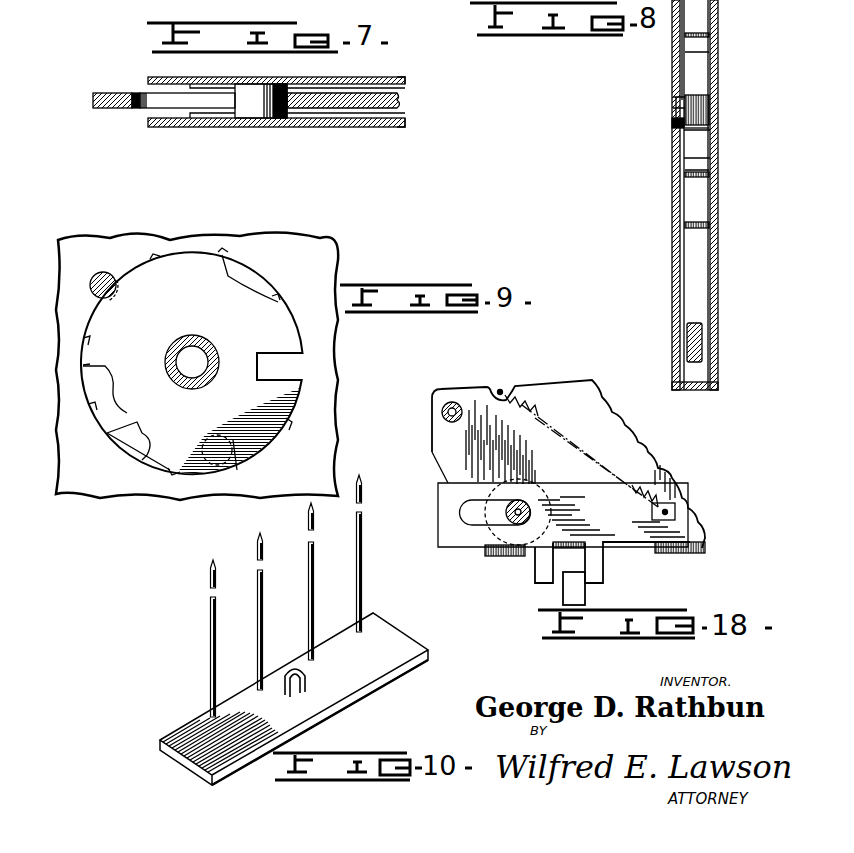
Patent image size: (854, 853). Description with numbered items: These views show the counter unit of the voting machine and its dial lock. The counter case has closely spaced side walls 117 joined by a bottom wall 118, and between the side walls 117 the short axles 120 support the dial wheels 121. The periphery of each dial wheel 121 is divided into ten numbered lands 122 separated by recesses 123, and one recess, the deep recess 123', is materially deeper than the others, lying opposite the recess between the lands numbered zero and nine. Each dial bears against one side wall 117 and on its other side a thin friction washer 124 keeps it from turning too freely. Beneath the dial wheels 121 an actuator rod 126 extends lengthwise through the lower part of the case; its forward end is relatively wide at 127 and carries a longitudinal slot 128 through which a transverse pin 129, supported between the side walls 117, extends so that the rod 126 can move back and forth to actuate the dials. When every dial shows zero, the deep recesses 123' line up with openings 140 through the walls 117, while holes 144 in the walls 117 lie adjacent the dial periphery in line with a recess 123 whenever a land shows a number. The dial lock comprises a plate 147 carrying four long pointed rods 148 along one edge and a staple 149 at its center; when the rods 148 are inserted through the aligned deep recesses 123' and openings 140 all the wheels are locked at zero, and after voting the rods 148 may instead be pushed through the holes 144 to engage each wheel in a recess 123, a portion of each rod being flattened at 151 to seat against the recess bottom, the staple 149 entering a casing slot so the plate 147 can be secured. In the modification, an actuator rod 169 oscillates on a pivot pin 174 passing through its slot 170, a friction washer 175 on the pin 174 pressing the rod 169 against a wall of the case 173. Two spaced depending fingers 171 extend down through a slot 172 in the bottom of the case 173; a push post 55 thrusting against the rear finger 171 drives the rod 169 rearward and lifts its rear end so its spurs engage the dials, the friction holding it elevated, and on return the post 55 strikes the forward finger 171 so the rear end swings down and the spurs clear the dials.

In FIG. 18, the push post 55 is at (572, 587).
In FIG. 7, the side walls 117 is at (407, 82).
In FIG. 8, the side walls 117 is at (672, 62).
In FIG. 9, the side walls 117 is at (290, 238).
In FIG. 7, the bottom wall 118 is at (360, 115).
In FIG. 8, the bottom wall 118 is at (700, 388).
In FIG. 8, the short axles 120 is at (674, 112).
In FIG. 9, the short axles 120 is at (218, 350).
In FIG. 9, the dial wheel 121 is at (207, 257).
In FIG. 8, the lands 122 is at (718, 197).
In FIG. 9, the lands 122 is at (270, 272).
In FIG. 8, the recesses 123 is at (694, 116).
In FIG. 9, the recesses 123 is at (180, 362).
In FIG. 9, the deep recess 123' is at (329, 365).
In FIG. 8, the friction washer 124 is at (675, 128).
In FIG. 7, the actuator rod 126 is at (373, 97).
In FIG. 8, the actuator rod 126 is at (690, 325).
In FIG. 7, the wide forward end 127 is at (93, 98).
In FIG. 7, the longitudinal slot 128 is at (145, 113).
In FIG. 7, the transverse pin 129 is at (263, 110).
In FIG. 9, the openings 140 is at (228, 462).
In FIG. 9, the holes 144 is at (106, 271).
In FIG. 10, the plate 147 is at (397, 638).
In FIG. 9, the pointed rods 148 is at (90, 288).
In FIG. 10, the pointed rods 148 is at (257, 617).
In FIG. 10, the staple 149 is at (307, 672).
In FIG. 9, the flattened portion 151 is at (107, 296).
In FIG. 18, the modified actuator rod 169 is at (677, 510).
In FIG. 18, the slot 170 is at (478, 522).
In FIG. 18, the depending fingers 171 is at (545, 567).
In FIG. 18, the slot 172 is at (642, 550).
In FIG. 18, the counter unit case 173 is at (618, 443).
In FIG. 18, the pivot pin 174 is at (535, 508).
In FIG. 18, the friction washer 175 is at (532, 480).